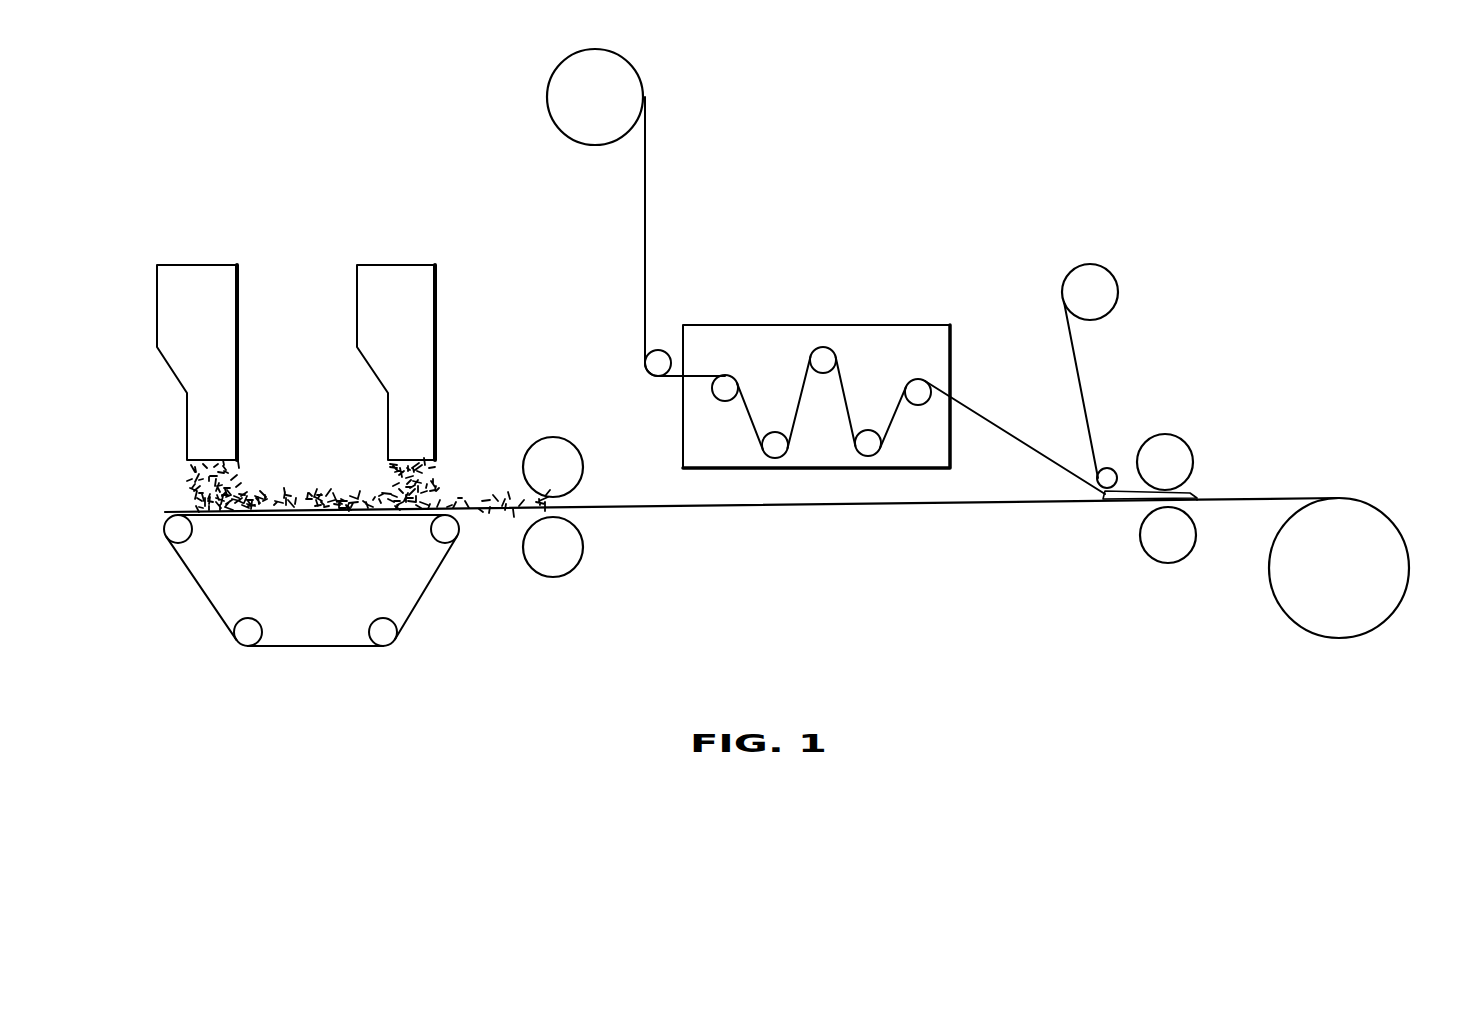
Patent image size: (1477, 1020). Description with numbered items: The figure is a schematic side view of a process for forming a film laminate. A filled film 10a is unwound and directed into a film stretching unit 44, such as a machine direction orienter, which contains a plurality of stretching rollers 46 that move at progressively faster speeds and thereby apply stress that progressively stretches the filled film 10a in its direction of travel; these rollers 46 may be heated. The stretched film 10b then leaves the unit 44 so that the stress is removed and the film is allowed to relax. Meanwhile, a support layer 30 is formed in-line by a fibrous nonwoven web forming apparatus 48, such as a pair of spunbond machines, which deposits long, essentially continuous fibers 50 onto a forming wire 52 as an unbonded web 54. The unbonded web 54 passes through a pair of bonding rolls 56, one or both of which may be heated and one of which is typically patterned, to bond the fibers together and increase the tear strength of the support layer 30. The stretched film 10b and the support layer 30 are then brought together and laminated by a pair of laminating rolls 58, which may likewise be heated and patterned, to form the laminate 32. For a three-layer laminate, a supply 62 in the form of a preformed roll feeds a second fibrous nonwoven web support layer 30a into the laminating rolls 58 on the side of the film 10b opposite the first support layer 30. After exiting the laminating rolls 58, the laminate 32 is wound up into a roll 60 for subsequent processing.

The filled film 10a is at (645, 163).
The film 10b is at (993, 418).
The support layer 30 is at (683, 508).
The second fibrous nonwoven web support layer 30a is at (1081, 387).
The laminate 32 is at (1265, 498).
The film stretching unit 44 is at (838, 305).
The stretching rollers 46 is at (728, 375).
The fibrous nonwoven web forming apparatus 48 is at (203, 265).
The fibers 50 is at (392, 470).
The forming wire 52 is at (327, 646).
The unbonded web 54 is at (492, 498).
The bonding rolls 56 is at (553, 437).
The laminating rolls 58 is at (1192, 446).
The roll 60 is at (1408, 582).
The supply 62 is at (1115, 280).